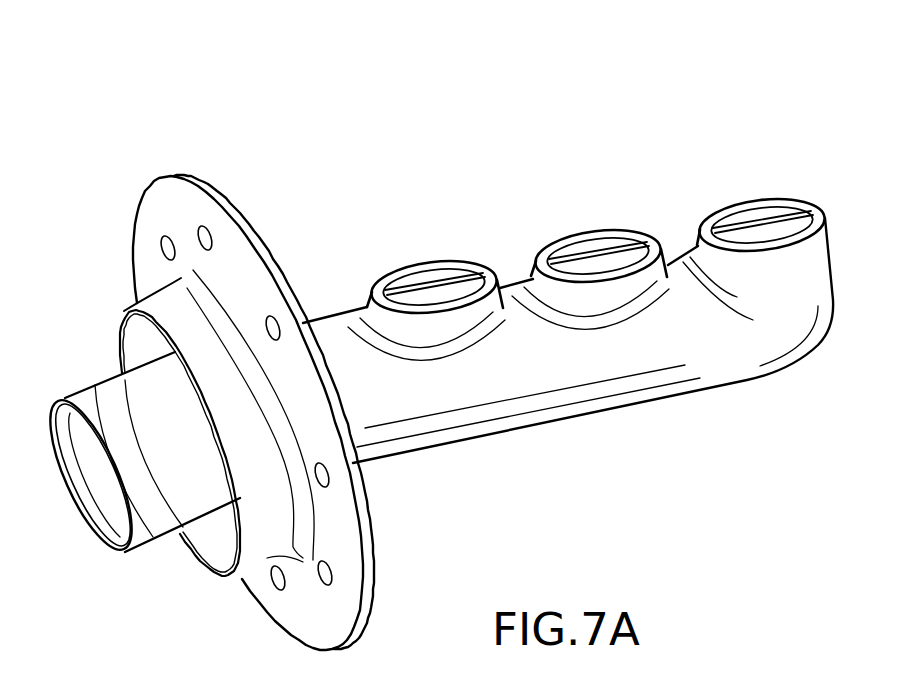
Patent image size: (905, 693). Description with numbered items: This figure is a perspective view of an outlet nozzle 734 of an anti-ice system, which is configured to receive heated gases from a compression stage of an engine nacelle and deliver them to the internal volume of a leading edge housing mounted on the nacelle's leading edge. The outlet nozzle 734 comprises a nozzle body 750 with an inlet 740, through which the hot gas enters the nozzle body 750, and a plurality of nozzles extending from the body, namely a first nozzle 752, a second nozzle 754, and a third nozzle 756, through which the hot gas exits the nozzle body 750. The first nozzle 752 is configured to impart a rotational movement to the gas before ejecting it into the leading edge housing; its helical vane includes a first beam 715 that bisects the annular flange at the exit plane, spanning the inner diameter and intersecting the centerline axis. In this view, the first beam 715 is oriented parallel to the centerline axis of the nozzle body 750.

The outlet nozzle 734 is at (614, 106).
The first beam 715 is at (412, 291).
The inlet 740 is at (86, 510).
The nozzle body 750 is at (520, 400).
The first nozzle 752 is at (427, 262).
The second nozzle 754 is at (585, 232).
The third nozzle 756 is at (760, 203).